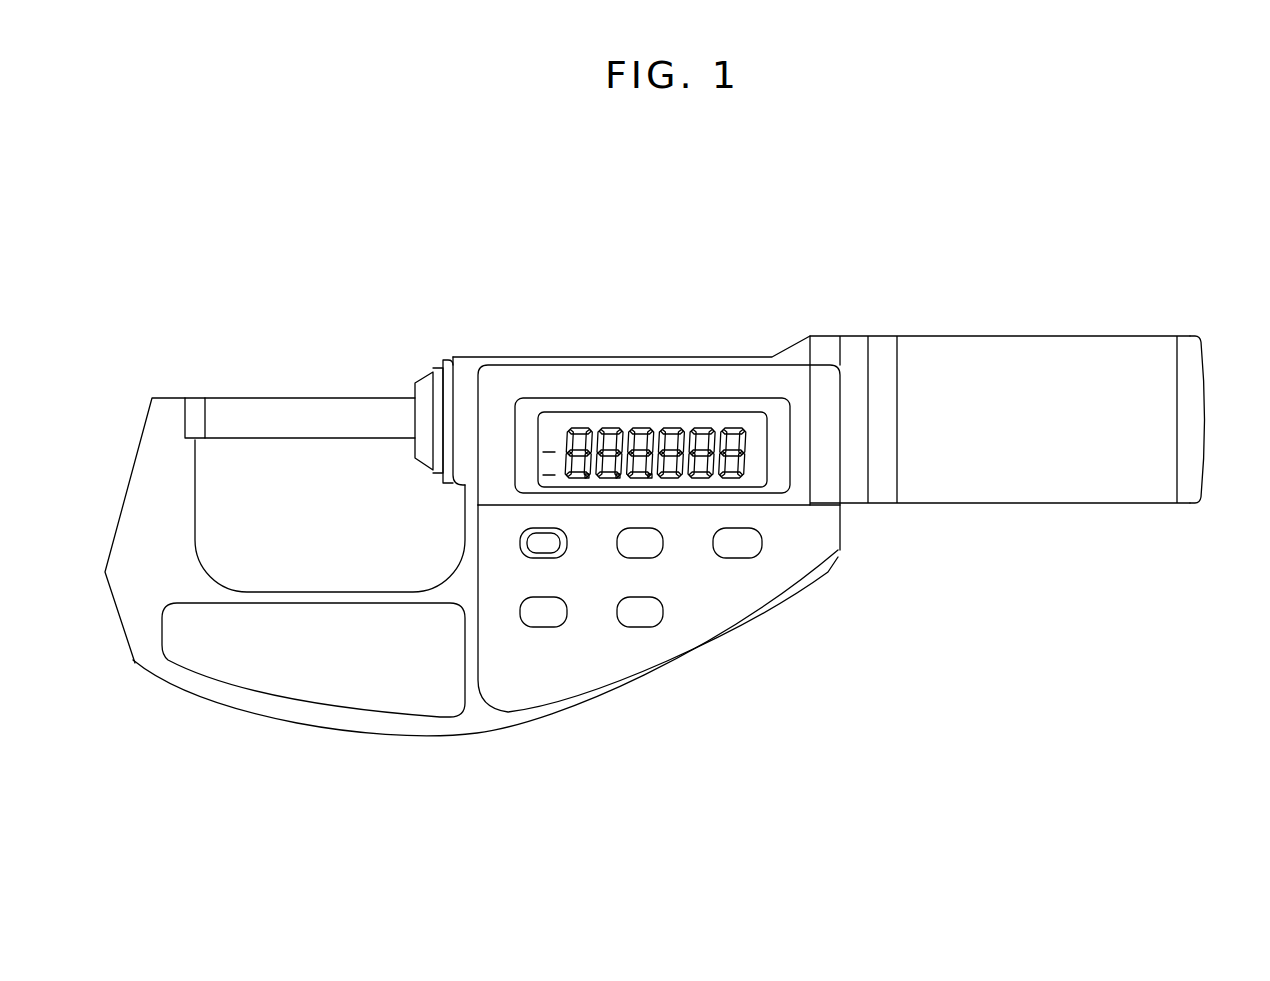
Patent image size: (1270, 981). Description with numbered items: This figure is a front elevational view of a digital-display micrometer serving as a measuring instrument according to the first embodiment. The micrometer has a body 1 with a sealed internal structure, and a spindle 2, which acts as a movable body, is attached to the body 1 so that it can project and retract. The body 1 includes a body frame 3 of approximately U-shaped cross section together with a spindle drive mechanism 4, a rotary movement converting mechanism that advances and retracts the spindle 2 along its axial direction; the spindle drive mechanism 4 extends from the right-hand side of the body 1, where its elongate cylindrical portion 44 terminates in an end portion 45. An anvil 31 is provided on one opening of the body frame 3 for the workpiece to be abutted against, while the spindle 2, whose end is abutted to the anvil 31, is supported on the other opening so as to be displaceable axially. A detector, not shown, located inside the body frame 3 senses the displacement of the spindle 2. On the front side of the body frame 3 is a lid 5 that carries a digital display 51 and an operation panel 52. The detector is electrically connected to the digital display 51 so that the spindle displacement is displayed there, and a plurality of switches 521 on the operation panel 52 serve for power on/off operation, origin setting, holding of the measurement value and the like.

The body 1 is at (762, 245).
The spindle 2 is at (305, 402).
The body frame 3 is at (477, 725).
The anvil 31 is at (200, 402).
The spindle drive mechanism 4 is at (1209, 326).
The thimble body 44 is at (1013, 360).
The end cap 45 is at (1190, 438).
The lid 5 is at (788, 580).
The digital display 51 is at (608, 405).
The operation panel 52 is at (678, 647).
The switches 521 is at (727, 558).